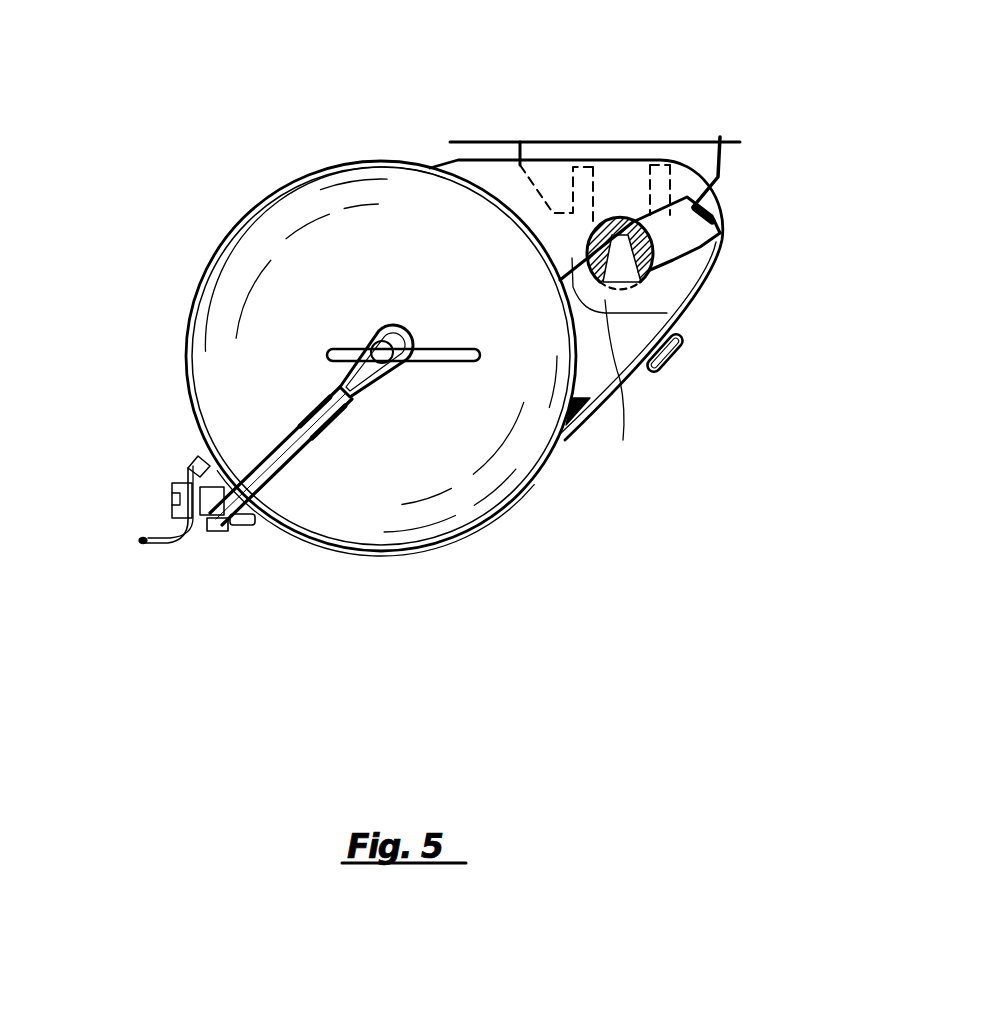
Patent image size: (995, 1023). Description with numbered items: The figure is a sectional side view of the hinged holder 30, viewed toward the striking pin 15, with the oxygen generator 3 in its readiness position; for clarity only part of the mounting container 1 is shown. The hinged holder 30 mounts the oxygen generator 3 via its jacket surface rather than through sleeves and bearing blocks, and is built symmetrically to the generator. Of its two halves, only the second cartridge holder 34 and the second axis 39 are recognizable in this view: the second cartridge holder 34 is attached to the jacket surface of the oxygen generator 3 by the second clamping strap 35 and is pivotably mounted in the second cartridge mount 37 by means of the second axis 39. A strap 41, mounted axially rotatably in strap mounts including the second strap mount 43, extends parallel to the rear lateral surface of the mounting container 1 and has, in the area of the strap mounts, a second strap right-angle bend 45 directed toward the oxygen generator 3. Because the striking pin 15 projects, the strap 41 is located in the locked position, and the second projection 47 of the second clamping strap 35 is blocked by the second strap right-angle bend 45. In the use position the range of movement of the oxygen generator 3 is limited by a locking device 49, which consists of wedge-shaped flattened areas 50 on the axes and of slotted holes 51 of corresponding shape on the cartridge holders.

The mounting container 1 is at (483, 142).
The oxygen generator 3 is at (403, 473).
The striking pin 15 is at (407, 370).
The hinged holder 30 is at (706, 123).
The second cartridge holder 34 is at (623, 440).
The second clamping strap 35 is at (282, 184).
The second cartridge mount 37 is at (688, 158).
The second axis 39 is at (597, 380).
The strap 41 is at (340, 387).
The second strap mount 43 is at (218, 535).
The second strap right-angle bend 45 is at (242, 527).
The second projection 47 is at (198, 456).
The locking device 49 is at (705, 262).
The wedge-shaped flattened areas 50 is at (687, 253).
The slotted holes 51 is at (647, 212).